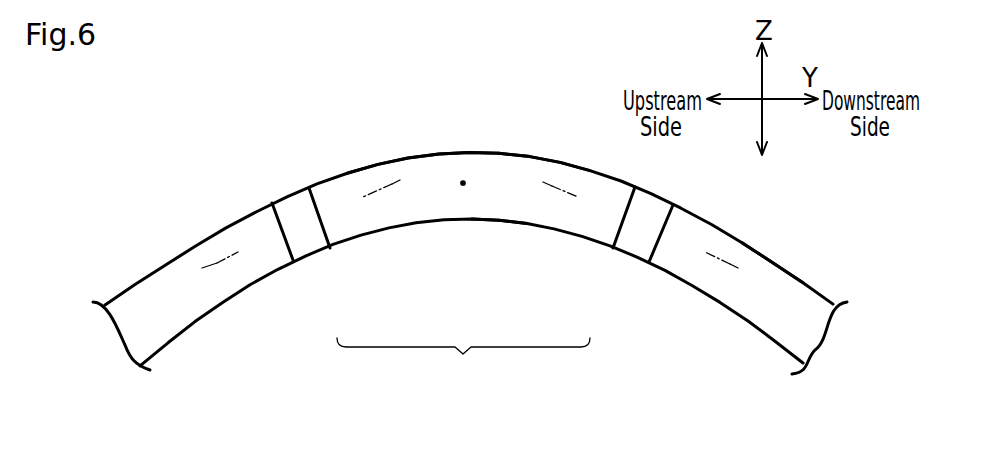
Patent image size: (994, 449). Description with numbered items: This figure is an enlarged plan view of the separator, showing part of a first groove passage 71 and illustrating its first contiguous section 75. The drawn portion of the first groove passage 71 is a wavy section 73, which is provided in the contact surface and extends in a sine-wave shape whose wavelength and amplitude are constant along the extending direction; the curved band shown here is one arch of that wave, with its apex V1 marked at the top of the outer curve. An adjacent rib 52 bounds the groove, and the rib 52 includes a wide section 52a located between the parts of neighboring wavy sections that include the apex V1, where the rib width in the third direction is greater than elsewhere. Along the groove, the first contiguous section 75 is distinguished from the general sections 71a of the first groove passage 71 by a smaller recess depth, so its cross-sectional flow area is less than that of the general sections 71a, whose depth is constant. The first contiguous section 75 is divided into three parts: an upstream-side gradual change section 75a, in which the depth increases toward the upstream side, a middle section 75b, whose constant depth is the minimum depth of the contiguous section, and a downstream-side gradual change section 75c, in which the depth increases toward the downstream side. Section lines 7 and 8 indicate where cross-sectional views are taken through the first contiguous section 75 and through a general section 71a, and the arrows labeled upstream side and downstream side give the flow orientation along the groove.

The first groove passage 71 is at (461, 263).
The wavy section 73 is at (120, 296).
The general section 71a is at (178, 318).
The first contiguous section 75 is at (463, 361).
The upstream-side gradual change section 75a is at (313, 227).
The middle section 75b is at (447, 202).
The downstream-side gradual change section 75c is at (622, 213).
The rib 52 is at (739, 344).
The wide section 52a is at (498, 247).
The apex V1 is at (463, 183).
The section line 7- 7 is at (202, 268).
The section line 8- 8 is at (543, 182).